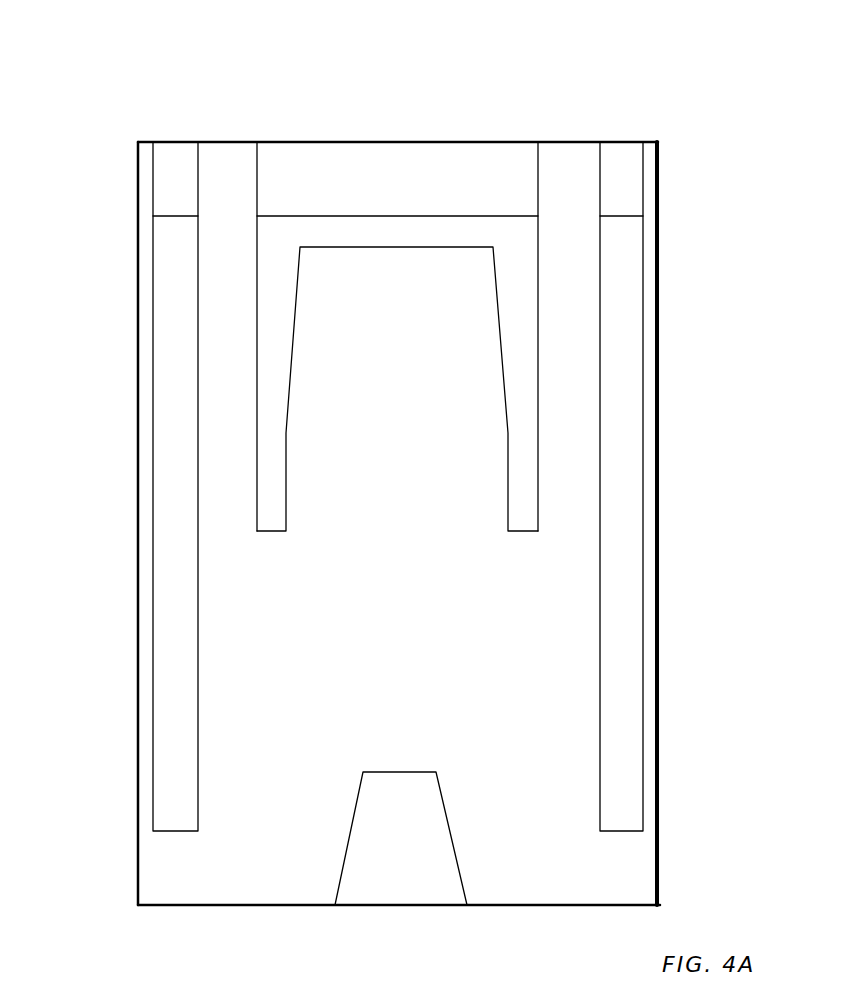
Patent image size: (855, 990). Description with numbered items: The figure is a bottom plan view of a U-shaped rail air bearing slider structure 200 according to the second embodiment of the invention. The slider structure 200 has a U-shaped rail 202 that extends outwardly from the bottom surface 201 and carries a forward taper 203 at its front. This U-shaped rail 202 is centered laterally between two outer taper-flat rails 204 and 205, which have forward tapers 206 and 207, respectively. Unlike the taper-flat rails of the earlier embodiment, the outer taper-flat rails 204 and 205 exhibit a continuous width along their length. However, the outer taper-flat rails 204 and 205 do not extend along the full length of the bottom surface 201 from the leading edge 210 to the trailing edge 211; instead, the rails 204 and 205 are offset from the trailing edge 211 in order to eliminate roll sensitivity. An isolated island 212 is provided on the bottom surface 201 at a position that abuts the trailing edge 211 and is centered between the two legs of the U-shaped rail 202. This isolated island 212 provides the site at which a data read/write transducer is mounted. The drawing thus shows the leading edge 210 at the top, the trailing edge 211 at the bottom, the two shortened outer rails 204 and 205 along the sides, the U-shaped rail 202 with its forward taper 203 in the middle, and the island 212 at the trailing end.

The slider structure 200 is at (603, 88).
The bottom surface 201 is at (318, 868).
The U-shaped rail 202 is at (291, 228).
The forward taper 203 is at (389, 157).
The outer taper-flat rail 204 is at (617, 582).
The outer taper-flat rail 205 is at (180, 583).
The forward taper 206 is at (420, 341).
The forward taper 207 is at (171, 147).
The leading edge 210 is at (138, 143).
The trailing edge 211 is at (138, 905).
The isolated island 212 is at (412, 877).